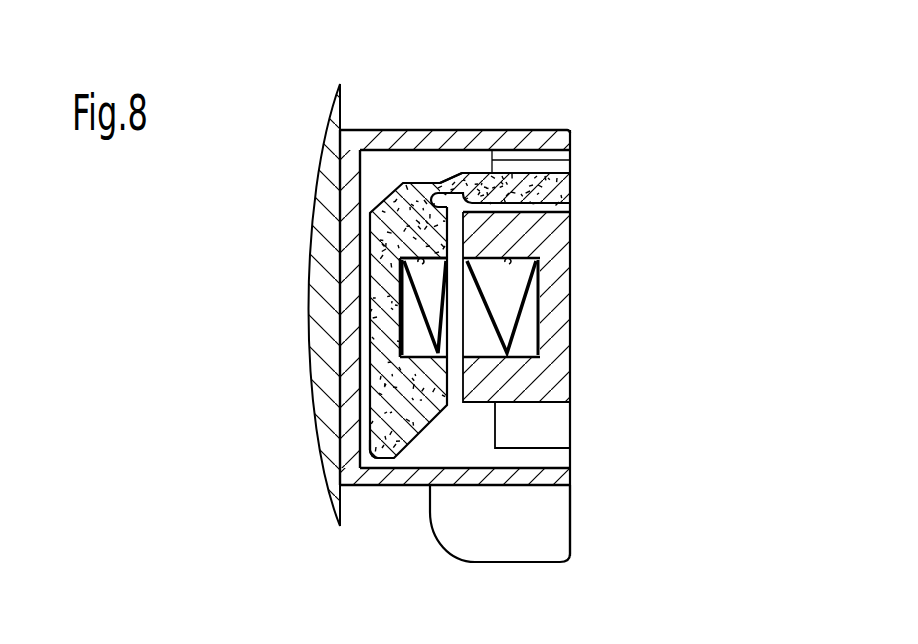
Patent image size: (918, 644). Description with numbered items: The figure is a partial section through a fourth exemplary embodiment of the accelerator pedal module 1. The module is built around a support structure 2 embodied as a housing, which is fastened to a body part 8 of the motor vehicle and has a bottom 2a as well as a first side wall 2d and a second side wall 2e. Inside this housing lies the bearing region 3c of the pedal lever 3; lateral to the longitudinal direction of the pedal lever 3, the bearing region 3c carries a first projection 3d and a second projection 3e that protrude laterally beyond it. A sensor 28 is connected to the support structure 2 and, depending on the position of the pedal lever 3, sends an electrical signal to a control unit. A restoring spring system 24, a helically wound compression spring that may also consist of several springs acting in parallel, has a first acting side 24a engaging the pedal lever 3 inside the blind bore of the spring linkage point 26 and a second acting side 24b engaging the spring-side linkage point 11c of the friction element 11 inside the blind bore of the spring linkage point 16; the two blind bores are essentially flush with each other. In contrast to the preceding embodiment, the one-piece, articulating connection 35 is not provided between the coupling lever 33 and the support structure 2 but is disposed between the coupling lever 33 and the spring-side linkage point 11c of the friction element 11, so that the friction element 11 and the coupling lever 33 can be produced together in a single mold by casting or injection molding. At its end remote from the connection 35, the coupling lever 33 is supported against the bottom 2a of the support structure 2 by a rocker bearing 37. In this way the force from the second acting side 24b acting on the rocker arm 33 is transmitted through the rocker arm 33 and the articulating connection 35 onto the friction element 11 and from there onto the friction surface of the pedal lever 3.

The accelerator pedal module 1 is at (634, 84).
The support structure 2 is at (393, 124).
The bottom 2a is at (340, 284).
The first side wall 2d is at (473, 130).
The second side wall 2e is at (470, 480).
The pedal lever 3 is at (562, 290).
The bearing region 3c is at (560, 357).
The first projection 3d is at (538, 165).
The second projection 3e is at (555, 425).
The body part 8 is at (316, 190).
The first friction element 11 is at (566, 177).
The spring-side linkage point 11c is at (478, 182).
The spring linkage point 16 is at (402, 250).
The restoring spring system 24 is at (532, 324).
The first acting side 24a is at (521, 282).
The second acting side 24b is at (412, 323).
The spring linkage point 26 is at (527, 248).
The sensor 28 is at (530, 544).
The coupling lever 33 is at (382, 404).
The one-piece, articulating connection 35 is at (444, 184).
The rocker bearing 37 is at (374, 452).